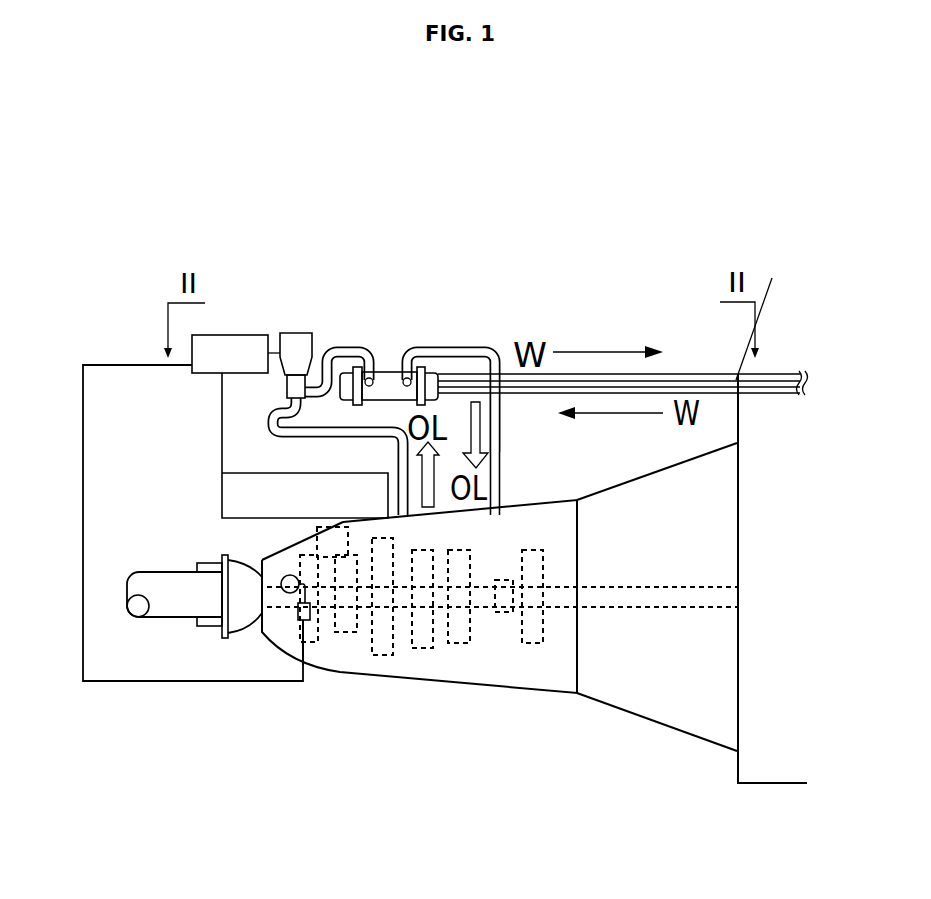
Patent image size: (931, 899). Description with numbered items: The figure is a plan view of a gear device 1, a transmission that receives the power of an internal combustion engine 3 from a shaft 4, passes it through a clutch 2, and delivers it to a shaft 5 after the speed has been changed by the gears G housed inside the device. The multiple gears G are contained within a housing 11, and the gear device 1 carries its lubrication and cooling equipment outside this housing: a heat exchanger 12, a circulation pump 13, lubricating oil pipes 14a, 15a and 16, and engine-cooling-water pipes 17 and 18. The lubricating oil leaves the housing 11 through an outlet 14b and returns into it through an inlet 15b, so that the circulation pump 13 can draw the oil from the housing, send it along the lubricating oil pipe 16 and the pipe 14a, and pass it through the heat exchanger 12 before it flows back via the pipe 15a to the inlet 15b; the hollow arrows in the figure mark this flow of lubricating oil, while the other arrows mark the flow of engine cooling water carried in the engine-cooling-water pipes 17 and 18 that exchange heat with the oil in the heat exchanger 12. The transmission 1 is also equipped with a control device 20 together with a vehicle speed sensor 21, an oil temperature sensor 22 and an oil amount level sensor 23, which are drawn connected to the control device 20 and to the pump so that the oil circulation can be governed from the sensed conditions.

The gear device 1 is at (343, 656).
The clutch 2 is at (645, 657).
The engine 3 is at (737, 750).
The shaft 4 is at (597, 597).
The shaft 5 is at (160, 604).
The housing 11 is at (505, 655).
The heat exchanger 12 is at (384, 372).
The circulation pump 13 is at (292, 345).
The lubricating oil pipe 14a is at (269, 408).
The outlet 14b is at (398, 513).
The lubricating oil pipe 15a is at (495, 372).
The inlet 15b is at (502, 500).
The lubricating oil pipe 16 is at (337, 347).
The engine-cooling-water pipe 17 is at (777, 394).
The engine-cooling-water pipe 18 is at (688, 372).
The control device 20 is at (193, 338).
The vehicle speed sensor 21 is at (281, 583).
The oil temperature sensor 22 is at (343, 525).
The oil amount level sensor 23 is at (343, 540).
The gears G is at (462, 612).